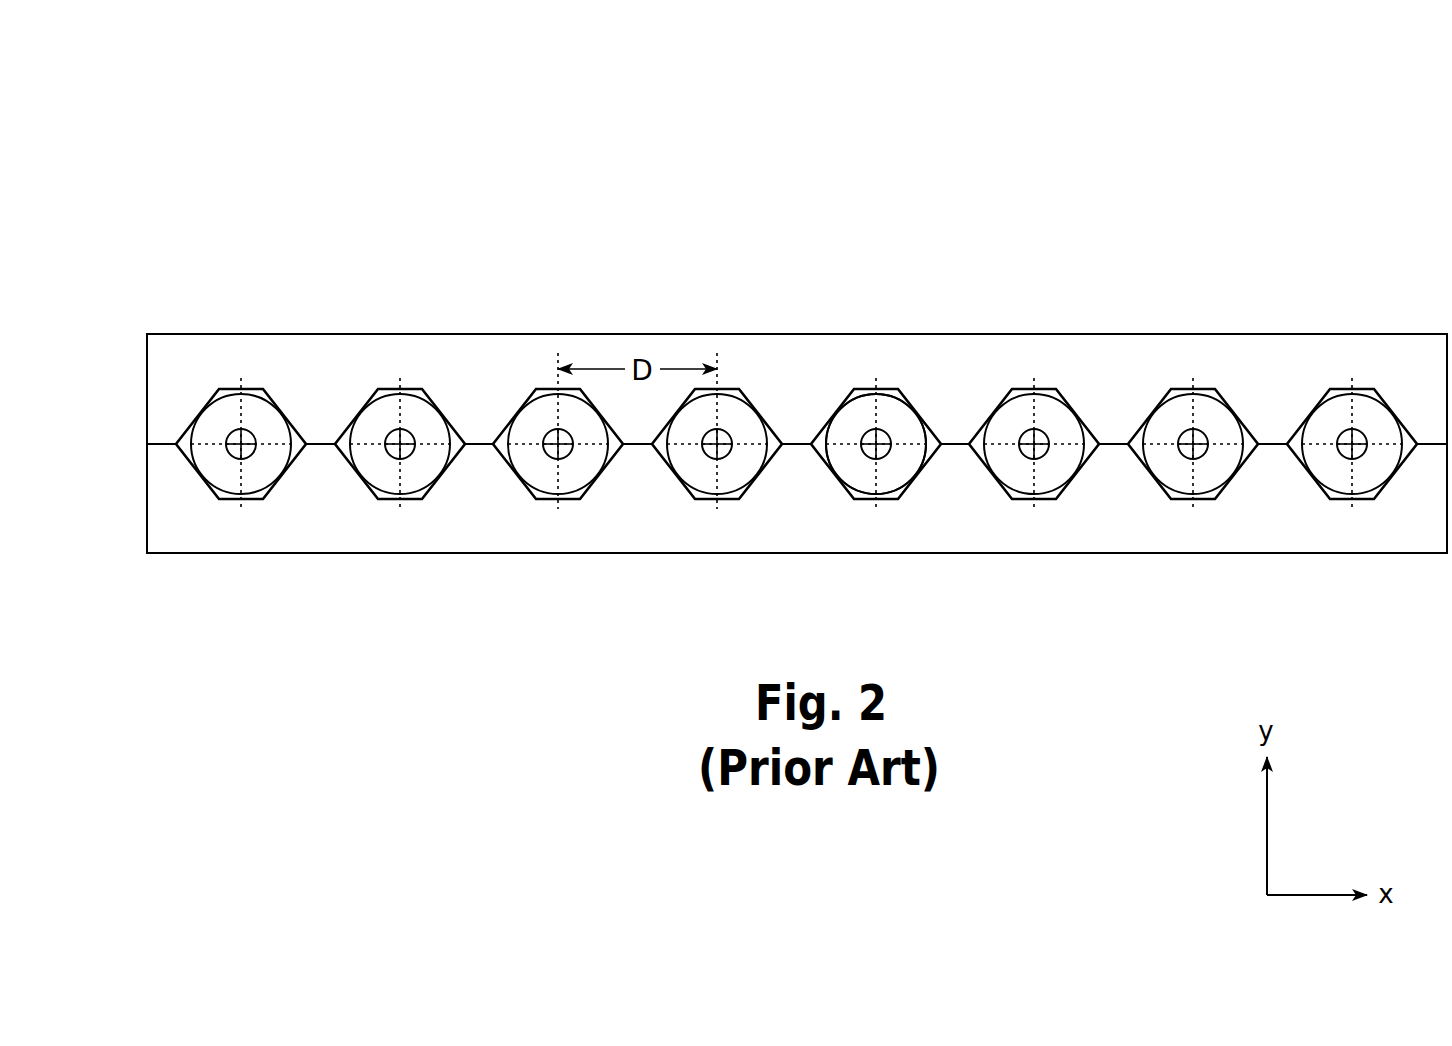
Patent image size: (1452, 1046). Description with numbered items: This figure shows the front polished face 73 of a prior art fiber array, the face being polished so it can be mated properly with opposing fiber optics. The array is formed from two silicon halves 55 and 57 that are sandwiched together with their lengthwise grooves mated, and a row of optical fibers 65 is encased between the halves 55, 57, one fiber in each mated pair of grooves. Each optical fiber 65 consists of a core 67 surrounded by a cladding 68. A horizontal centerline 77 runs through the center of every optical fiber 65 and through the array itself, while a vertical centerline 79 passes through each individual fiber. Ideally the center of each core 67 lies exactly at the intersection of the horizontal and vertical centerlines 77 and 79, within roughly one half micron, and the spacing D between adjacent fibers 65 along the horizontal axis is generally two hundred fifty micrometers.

The front polished face 73 is at (1167, 173).
The silicon half 57 is at (1162, 355).
The silicon half 55 is at (1142, 537).
The optical fiber 65 is at (548, 498).
The core 67 is at (407, 430).
The cladding 68 is at (372, 465).
The horizontal centerline 77 is at (747, 447).
The vertical centerline 79 is at (877, 408).